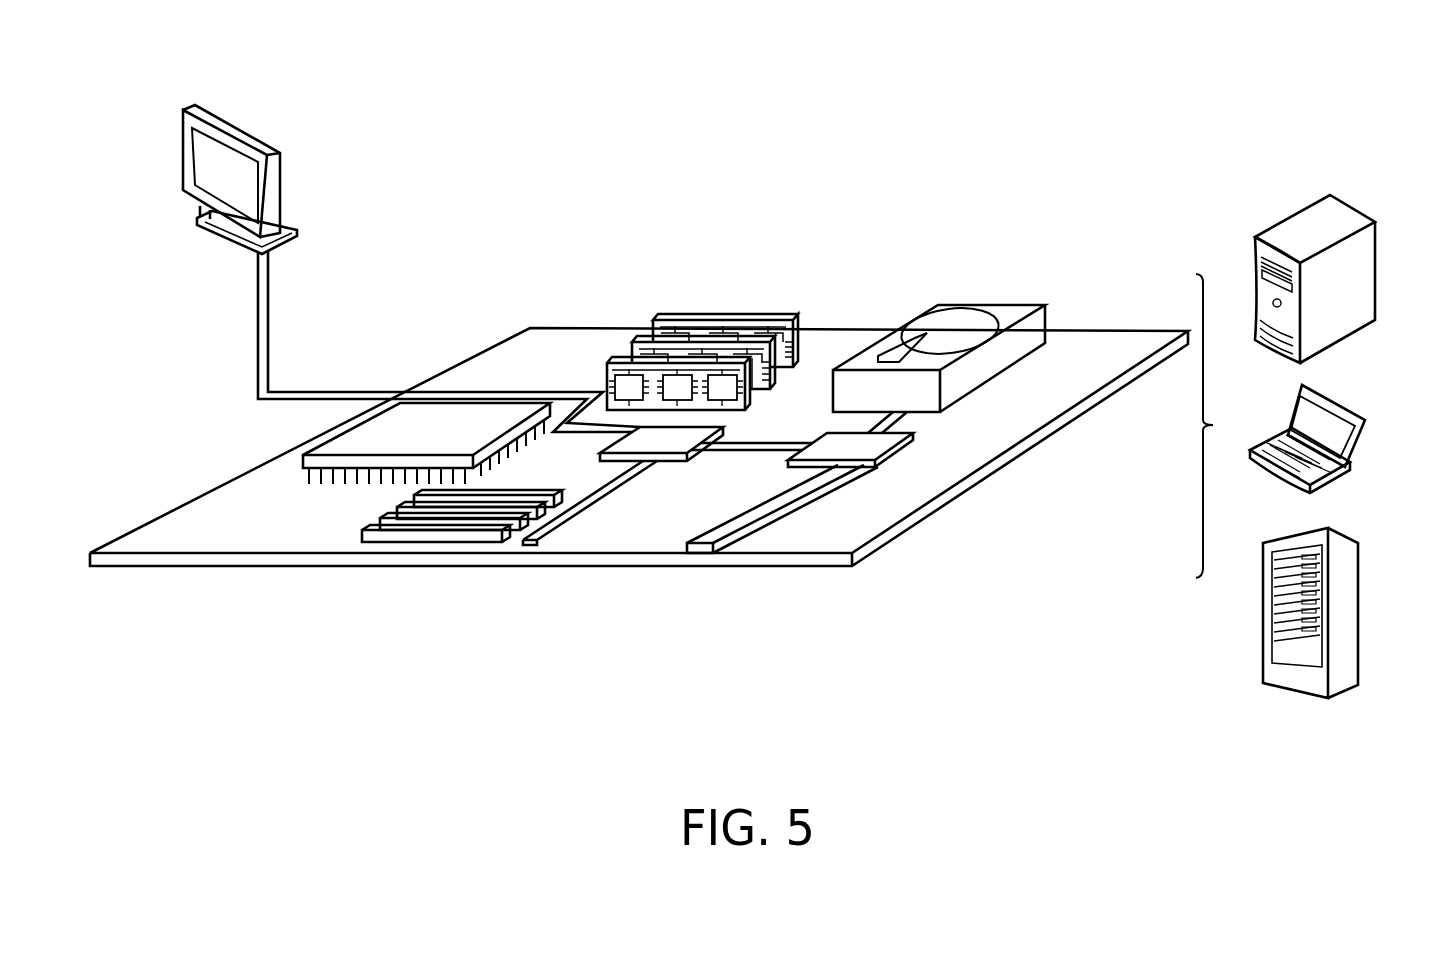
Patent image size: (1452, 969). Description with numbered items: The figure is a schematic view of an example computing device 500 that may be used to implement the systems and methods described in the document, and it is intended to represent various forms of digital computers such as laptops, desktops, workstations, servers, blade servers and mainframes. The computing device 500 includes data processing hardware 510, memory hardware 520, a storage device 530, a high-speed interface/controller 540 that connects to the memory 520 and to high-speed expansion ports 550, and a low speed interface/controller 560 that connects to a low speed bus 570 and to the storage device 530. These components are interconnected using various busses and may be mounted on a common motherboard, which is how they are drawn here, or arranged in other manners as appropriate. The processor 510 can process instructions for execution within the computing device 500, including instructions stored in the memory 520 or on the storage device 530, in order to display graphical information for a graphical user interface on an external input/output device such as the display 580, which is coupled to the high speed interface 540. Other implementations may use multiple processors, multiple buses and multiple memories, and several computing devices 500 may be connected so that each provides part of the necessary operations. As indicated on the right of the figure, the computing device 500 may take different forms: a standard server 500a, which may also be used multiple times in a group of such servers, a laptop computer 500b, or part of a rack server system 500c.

The computing device 500 is at (1012, 89).
The standard server 500a is at (1285, 217).
The laptop computer 500b is at (1347, 400).
The rack server system 500c is at (1352, 596).
The data processing hardware 510 is at (302, 456).
The memory hardware 520 is at (719, 321).
The storage device 530 is at (988, 302).
The high-speed interface/controller 540 is at (668, 457).
The high-speed expansion ports 550 is at (362, 531).
The low speed interface/controller 560 is at (840, 443).
The low speed bus 570 is at (720, 554).
The display 580 is at (183, 158).